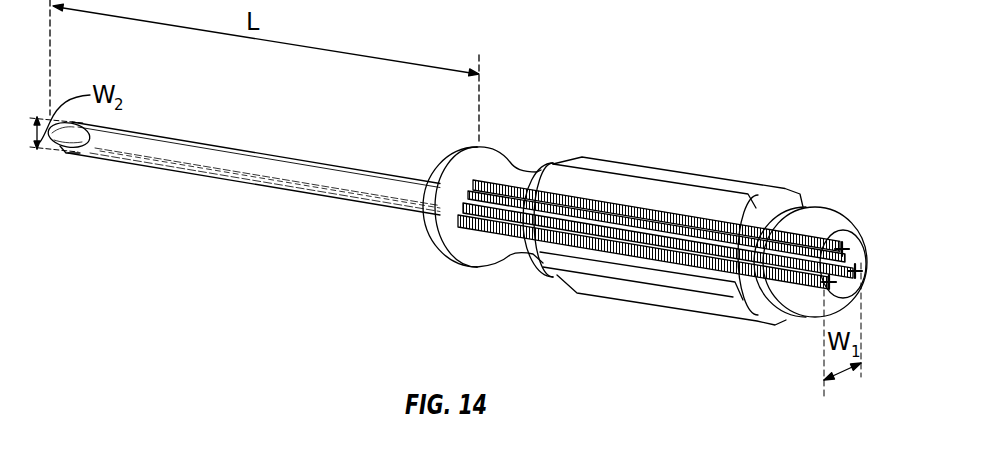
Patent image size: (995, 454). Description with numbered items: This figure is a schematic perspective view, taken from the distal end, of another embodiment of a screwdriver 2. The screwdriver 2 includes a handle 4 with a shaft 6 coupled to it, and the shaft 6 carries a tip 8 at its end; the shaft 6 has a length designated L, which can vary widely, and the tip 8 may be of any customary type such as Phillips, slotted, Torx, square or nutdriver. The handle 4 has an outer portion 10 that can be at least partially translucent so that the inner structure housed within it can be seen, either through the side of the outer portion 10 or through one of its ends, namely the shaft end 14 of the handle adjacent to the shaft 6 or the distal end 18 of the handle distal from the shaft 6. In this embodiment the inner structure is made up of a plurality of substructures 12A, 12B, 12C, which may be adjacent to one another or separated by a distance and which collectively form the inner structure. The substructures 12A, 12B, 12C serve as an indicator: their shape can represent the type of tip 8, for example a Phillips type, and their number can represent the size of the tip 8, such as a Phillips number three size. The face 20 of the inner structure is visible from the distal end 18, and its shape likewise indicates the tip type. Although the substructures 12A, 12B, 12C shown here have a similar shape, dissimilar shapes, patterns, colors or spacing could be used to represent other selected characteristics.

The screwdriver 2 is at (537, 131).
The handle 4 is at (694, 313).
The shaft 6 is at (242, 172).
The tip 8 is at (70, 150).
The outer portion 10 is at (610, 290).
The substructure 12A is at (843, 244).
The substructure 12B is at (856, 266).
The substructure 12C is at (828, 286).
The shaft end 14 is at (433, 252).
The distal end 18 is at (808, 218).
The face 20 is at (865, 262).